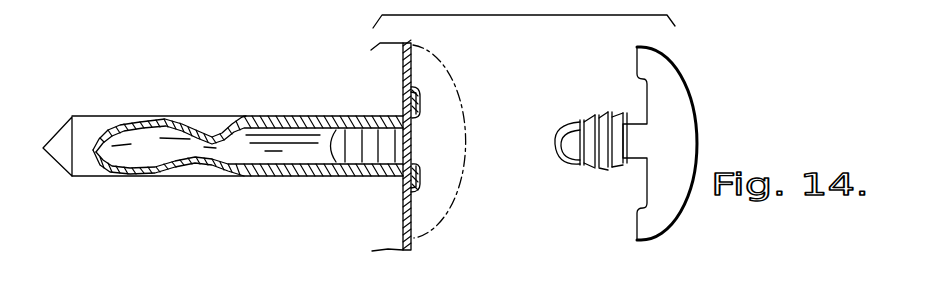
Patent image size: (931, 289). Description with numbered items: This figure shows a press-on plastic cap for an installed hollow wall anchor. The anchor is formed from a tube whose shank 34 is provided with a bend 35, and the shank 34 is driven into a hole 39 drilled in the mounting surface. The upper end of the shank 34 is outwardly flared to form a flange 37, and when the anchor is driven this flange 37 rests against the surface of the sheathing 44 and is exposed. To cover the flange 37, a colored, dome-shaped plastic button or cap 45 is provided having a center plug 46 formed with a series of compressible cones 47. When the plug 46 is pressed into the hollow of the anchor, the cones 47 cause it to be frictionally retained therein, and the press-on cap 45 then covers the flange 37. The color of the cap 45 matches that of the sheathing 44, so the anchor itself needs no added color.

The shank 34 is at (283, 119).
The bend 35 is at (215, 177).
The flange 37 is at (421, 185).
The hole 39 is at (87, 168).
The sheathing 44 is at (411, 248).
The cap 45 is at (692, 128).
The center plug 46 is at (592, 166).
The compressible cones 47 is at (607, 112).